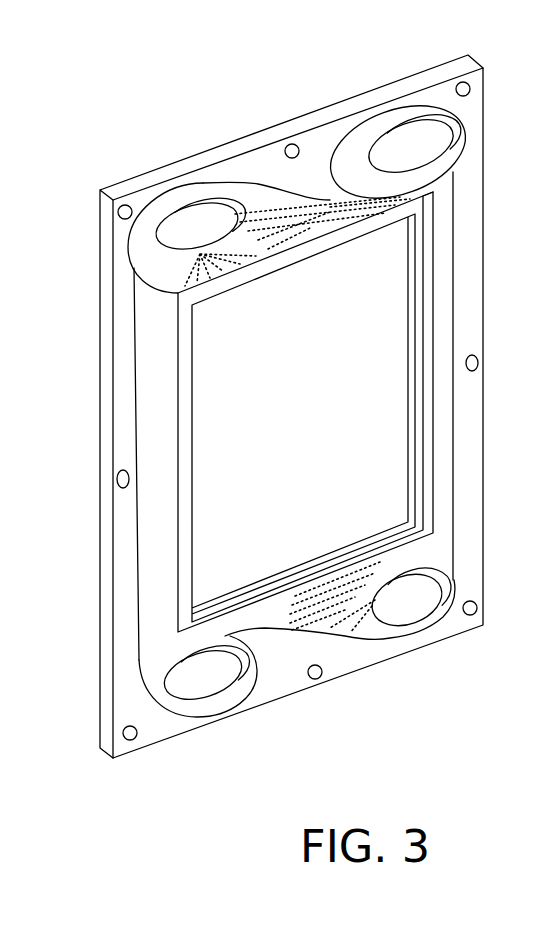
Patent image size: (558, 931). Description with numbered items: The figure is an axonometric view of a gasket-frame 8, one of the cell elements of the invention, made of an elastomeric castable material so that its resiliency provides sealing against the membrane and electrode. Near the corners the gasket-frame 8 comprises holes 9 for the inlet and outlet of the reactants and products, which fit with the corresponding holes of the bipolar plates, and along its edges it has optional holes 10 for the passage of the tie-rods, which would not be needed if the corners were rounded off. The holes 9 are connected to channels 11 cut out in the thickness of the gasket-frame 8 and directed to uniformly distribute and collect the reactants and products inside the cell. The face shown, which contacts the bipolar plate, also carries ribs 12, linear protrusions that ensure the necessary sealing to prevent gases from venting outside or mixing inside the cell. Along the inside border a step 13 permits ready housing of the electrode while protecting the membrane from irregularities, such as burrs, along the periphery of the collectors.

The gasket-frame 8 is at (470, 107).
The holes 9 is at (208, 232).
The holes 10 is at (122, 206).
The channels 11 is at (408, 202).
The ribs 12 is at (462, 117).
The step 13 is at (390, 220).